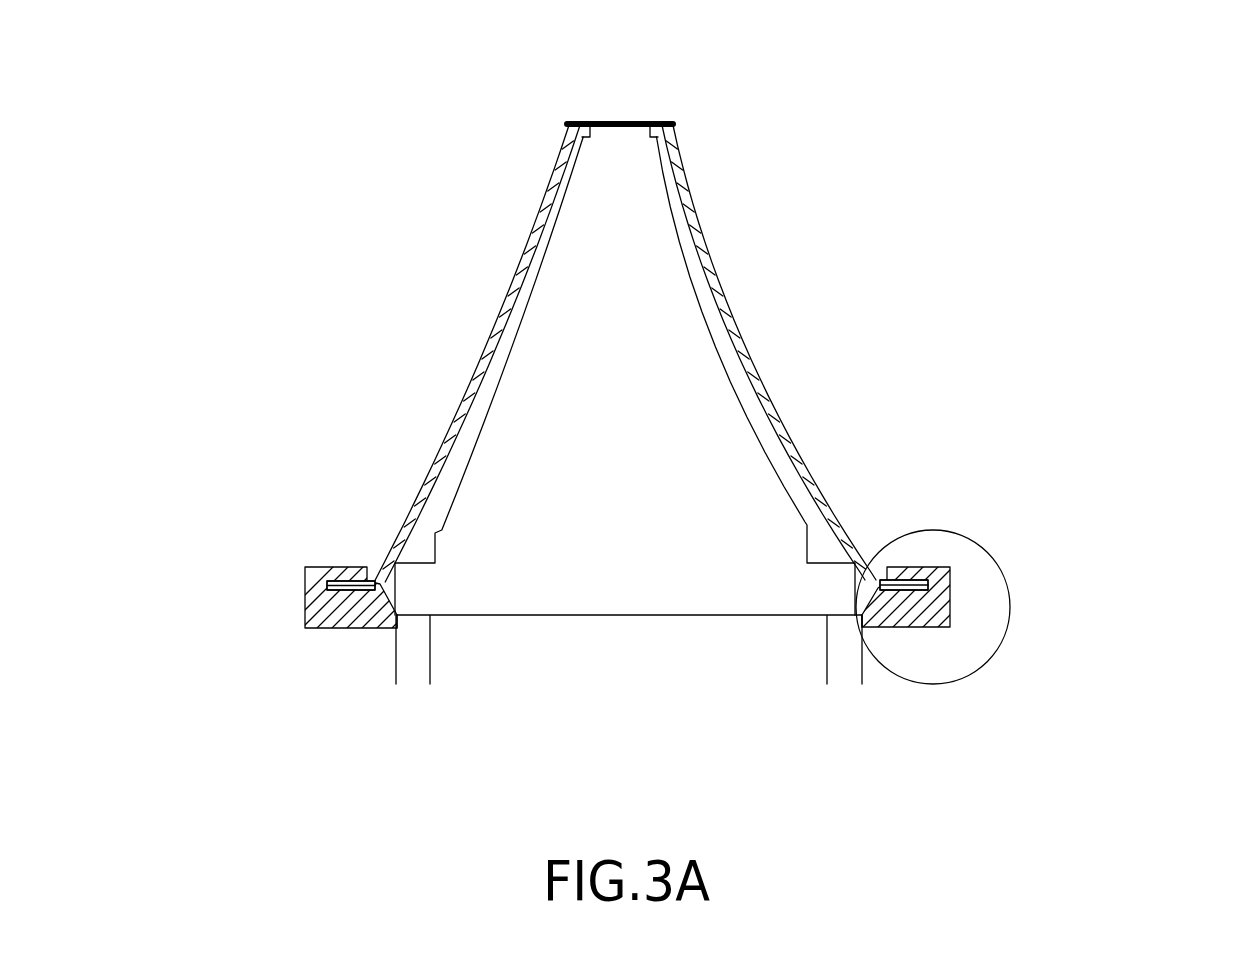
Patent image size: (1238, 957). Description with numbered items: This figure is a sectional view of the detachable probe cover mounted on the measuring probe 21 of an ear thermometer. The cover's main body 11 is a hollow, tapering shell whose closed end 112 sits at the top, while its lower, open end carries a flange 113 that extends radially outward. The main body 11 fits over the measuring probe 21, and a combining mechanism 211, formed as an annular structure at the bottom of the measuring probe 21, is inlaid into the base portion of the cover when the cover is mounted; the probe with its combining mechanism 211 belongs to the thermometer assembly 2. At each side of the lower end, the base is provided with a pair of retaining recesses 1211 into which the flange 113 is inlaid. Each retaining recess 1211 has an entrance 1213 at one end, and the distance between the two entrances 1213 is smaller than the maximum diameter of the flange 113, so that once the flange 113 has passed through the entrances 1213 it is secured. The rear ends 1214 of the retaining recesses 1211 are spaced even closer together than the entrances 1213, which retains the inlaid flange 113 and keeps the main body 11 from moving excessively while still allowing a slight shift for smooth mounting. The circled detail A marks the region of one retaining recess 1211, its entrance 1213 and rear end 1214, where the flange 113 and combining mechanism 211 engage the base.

The closed end 112 is at (656, 121).
The main body 11 is at (508, 293).
The measuring probe 21 is at (662, 310).
The inner member / base 2 is at (800, 652).
The combining mechanism 211 is at (825, 585).
The retaining recesses 1211 is at (360, 568).
The flange 113 is at (905, 577).
The entrances 1213 is at (350, 615).
The rear ends 1214 is at (905, 612).
The enlarged detail region A is at (945, 528).